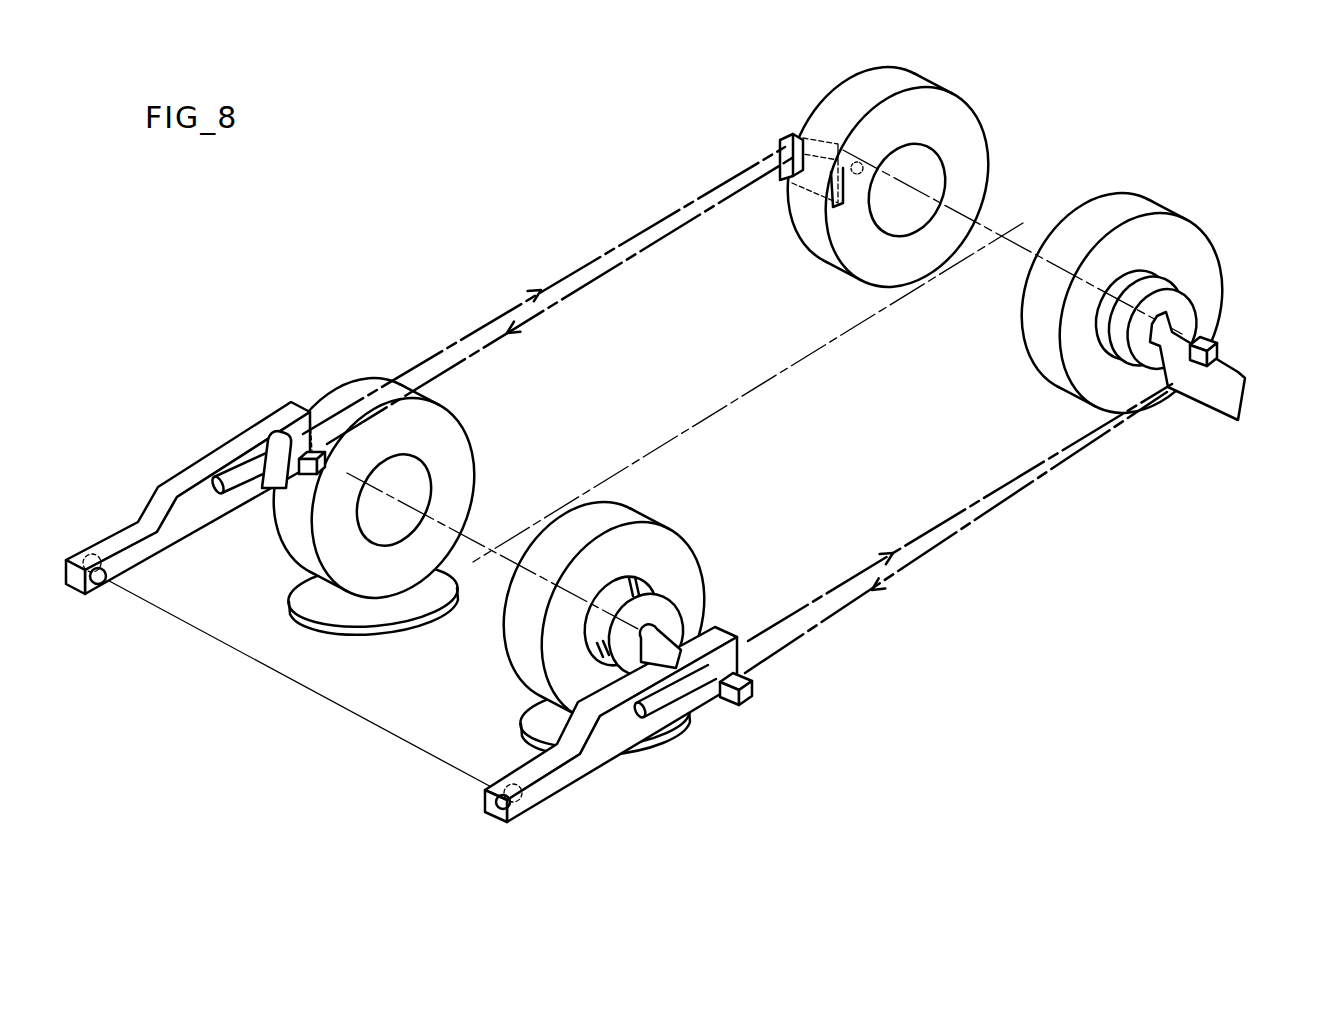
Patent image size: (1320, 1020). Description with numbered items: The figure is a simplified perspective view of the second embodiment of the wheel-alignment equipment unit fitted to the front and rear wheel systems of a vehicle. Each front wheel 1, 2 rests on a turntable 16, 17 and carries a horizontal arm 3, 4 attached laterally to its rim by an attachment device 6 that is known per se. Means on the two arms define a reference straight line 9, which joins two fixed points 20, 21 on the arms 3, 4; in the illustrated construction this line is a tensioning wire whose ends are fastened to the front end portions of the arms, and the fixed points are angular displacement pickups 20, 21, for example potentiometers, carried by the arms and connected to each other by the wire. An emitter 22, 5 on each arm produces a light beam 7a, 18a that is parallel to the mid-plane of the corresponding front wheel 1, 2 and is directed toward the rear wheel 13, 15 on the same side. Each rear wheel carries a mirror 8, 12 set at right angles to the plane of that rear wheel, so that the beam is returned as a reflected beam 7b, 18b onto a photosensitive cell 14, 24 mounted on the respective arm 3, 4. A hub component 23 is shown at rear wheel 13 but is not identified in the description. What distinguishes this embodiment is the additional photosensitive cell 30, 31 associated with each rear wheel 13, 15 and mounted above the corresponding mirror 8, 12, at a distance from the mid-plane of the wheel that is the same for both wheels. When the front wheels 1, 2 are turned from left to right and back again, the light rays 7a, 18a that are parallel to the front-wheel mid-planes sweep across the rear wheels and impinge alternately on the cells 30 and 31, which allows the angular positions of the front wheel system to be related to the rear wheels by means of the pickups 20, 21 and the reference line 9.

The front wheel 1 is at (660, 546).
The front wheel 2 is at (430, 438).
The arm 3 is at (626, 735).
The arm 4 is at (280, 415).
The emitter 5 is at (237, 467).
The attachment device 6 is at (675, 612).
The light beam 7a is at (962, 512).
The reflected light beam 7b is at (937, 545).
The mirror 8 is at (1195, 383).
The reference straight line 9 is at (318, 697).
The mirror 12 is at (780, 150).
The rear wheel 13 is at (1033, 335).
The photosensitive cell 14 is at (755, 688).
The rear wheel 15 is at (872, 258).
The turntable 16 is at (423, 625).
The turntable 17 is at (542, 718).
The light beam 18a is at (537, 290).
The reflected light beam 18b is at (575, 283).
The angular displacement pickup 20 is at (520, 808).
The angular displacement pickup 21 is at (95, 590).
The emitter 22 is at (678, 690).
The hub 23 is at (1180, 298).
The photosensitive cell 24 is at (310, 415).
The photosensitive cell 30 is at (1212, 338).
The photosensitive cell 31 is at (817, 136).